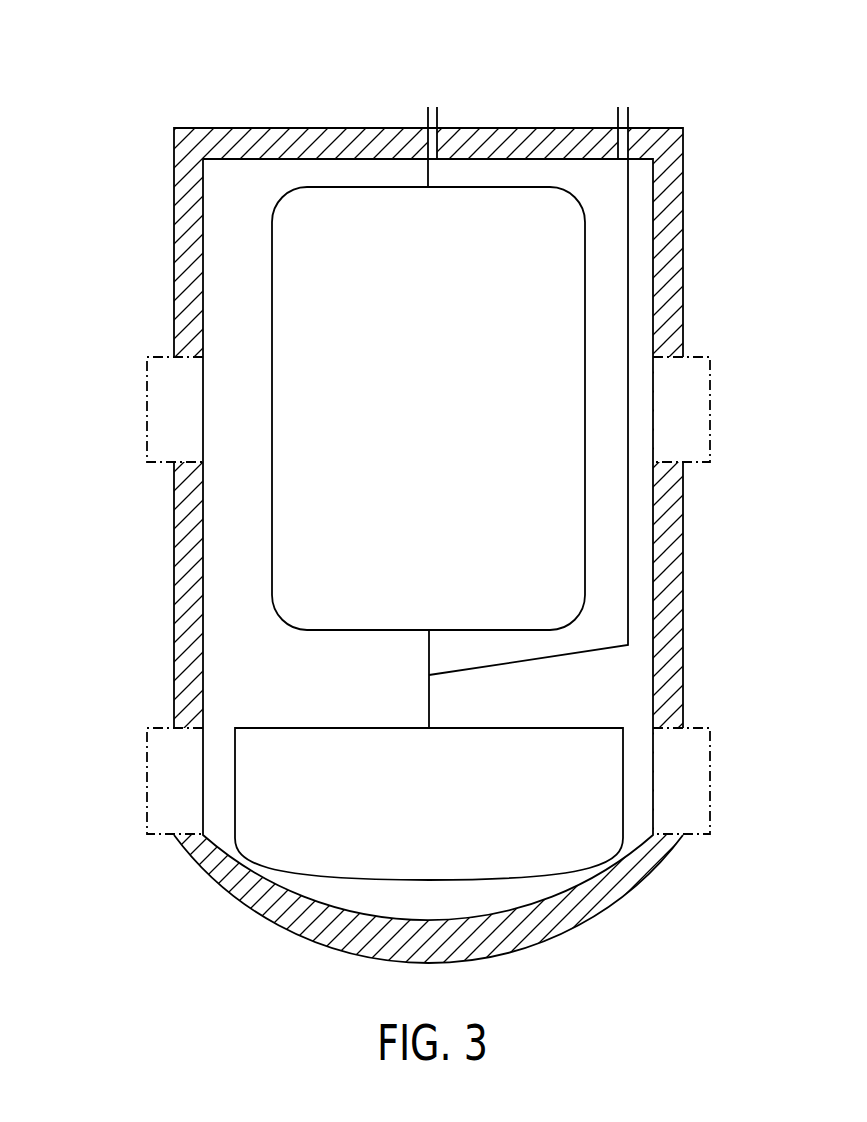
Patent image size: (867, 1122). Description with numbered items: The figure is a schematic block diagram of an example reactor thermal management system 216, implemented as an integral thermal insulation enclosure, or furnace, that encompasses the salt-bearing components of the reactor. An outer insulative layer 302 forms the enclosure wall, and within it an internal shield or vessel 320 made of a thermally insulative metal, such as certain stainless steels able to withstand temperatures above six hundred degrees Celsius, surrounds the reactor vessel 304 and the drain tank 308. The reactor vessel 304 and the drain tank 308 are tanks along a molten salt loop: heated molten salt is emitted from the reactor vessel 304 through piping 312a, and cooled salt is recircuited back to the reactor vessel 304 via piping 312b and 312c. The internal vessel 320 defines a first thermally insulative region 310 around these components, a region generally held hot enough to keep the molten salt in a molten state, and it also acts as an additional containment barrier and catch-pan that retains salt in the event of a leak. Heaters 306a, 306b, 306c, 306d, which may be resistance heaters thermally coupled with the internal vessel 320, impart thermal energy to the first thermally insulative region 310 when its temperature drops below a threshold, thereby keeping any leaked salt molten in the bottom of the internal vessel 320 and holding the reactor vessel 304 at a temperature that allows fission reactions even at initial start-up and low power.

The reactor thermal management system 216 is at (697, 58).
The insulative layer 302 is at (667, 143).
The reactor vessel 304 is at (272, 292).
The heater 306a is at (147, 410).
The heater 306b is at (710, 410).
The heater 306c is at (147, 780).
The heater 306d is at (710, 790).
The drain tank 308 is at (332, 728).
The first thermally insulative region 310 is at (624, 681).
The piping 312a is at (433, 177).
The piping 312b is at (428, 648).
The piping 312c is at (627, 543).
The internal vessel 320 is at (653, 257).